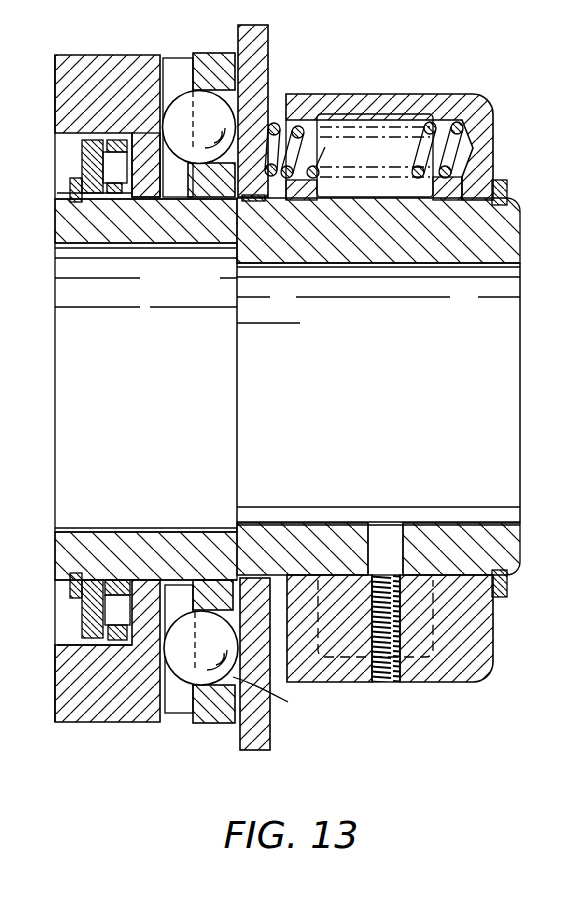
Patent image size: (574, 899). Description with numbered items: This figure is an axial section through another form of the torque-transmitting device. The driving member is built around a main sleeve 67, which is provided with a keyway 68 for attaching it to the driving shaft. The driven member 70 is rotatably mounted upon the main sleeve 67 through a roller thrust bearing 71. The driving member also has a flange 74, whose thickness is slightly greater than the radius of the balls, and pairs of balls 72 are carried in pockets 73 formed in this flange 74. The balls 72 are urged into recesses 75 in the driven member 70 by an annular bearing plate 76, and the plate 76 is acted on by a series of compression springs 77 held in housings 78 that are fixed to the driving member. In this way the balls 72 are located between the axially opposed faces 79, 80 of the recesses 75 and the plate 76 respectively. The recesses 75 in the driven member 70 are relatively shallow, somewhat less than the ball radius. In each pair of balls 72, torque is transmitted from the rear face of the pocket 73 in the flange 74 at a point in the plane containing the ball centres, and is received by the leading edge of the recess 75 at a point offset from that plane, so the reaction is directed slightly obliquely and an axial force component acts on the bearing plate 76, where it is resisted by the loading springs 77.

The main sleeve 67 is at (452, 535).
The keyway 68 is at (322, 518).
The driven member 70 is at (102, 710).
The roller thrust bearing 71 is at (110, 190).
The balls 72 is at (203, 622).
The pockets 73 is at (276, 697).
The flange 74 is at (218, 712).
The recesses 75 is at (173, 190).
The annular bearing plate 76 is at (260, 722).
The compression springs 77 is at (426, 126).
The housings 78 is at (477, 190).
The axially opposed face of the recesses 79 is at (150, 190).
The axially opposed face of the plate 80 is at (240, 180).